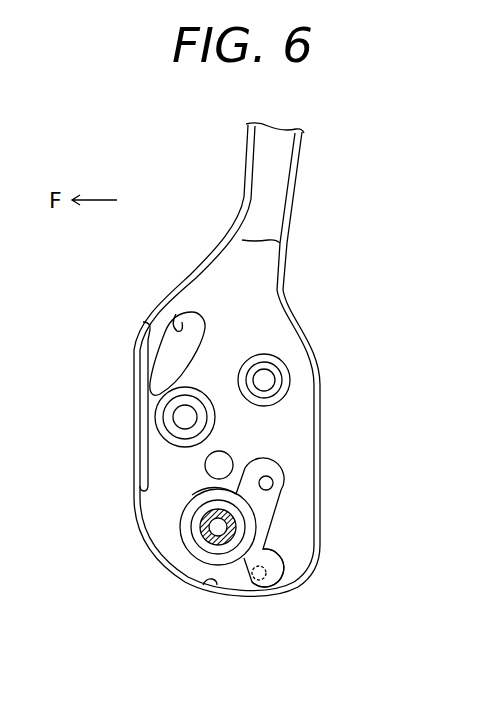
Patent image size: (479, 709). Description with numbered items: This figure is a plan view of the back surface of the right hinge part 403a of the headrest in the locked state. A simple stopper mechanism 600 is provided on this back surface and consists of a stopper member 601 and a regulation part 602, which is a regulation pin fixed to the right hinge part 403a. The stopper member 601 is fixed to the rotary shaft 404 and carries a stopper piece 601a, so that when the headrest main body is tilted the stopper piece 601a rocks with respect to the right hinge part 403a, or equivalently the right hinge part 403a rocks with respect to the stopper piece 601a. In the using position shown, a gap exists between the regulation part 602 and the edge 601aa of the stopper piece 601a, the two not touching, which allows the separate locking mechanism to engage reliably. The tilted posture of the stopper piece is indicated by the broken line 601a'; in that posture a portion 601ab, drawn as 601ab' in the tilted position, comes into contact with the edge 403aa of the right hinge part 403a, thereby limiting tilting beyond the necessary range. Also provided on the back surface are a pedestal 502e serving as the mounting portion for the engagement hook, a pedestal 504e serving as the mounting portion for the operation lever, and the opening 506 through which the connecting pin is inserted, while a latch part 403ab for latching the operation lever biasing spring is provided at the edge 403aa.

The right hinge part 403a is at (339, 314).
The latch part 403ab is at (283, 250).
The edge 403aa is at (204, 586).
The opening 506 is at (176, 314).
The pedestal (mounting portion) 502e is at (157, 432).
The pedestal (mounting portion) 504e is at (289, 376).
The regulation part (regulation pin) 602 is at (205, 465).
The stopper mechanism 600 is at (288, 540).
The stopper member 601 is at (189, 555).
The rotary shaft 404 is at (206, 541).
The stopper piece 601a is at (328, 513).
The edge 601aa is at (192, 495).
The portion 601ab is at (349, 495).
The portion (tilted posture) 601ab' is at (261, 617).
The stopper piece (tilted posture, broken line) 601a' is at (318, 596).